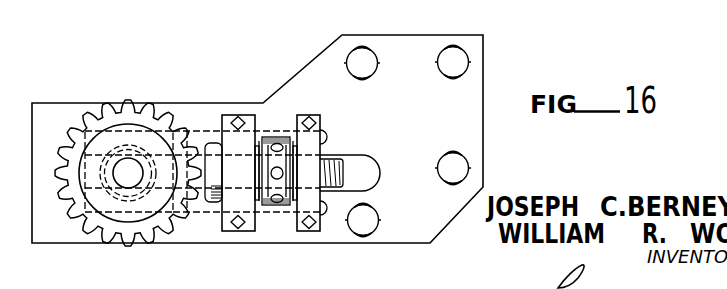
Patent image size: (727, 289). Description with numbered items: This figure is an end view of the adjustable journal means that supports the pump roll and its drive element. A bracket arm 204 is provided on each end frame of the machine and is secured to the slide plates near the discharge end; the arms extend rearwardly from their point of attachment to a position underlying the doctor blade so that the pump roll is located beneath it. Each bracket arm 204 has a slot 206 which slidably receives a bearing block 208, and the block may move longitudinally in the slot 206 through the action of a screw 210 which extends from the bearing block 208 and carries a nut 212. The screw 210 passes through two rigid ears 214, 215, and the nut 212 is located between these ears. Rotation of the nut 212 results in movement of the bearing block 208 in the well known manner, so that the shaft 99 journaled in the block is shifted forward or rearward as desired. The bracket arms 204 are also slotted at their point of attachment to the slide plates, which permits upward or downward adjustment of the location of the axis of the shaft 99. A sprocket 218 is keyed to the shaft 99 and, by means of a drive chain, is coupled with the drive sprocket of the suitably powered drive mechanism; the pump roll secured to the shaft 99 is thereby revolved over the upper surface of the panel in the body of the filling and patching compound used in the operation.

The shaft 99 is at (128, 173).
The bracket arm 204 is at (203, 108).
The slot 206 is at (213, 210).
The bearing block 208 is at (141, 128).
The screw 210 is at (333, 161).
The nut 212 is at (280, 140).
The rigid ear 214 is at (239, 173).
The rigid ear 215 is at (308, 200).
The sprocket 218 is at (106, 102).